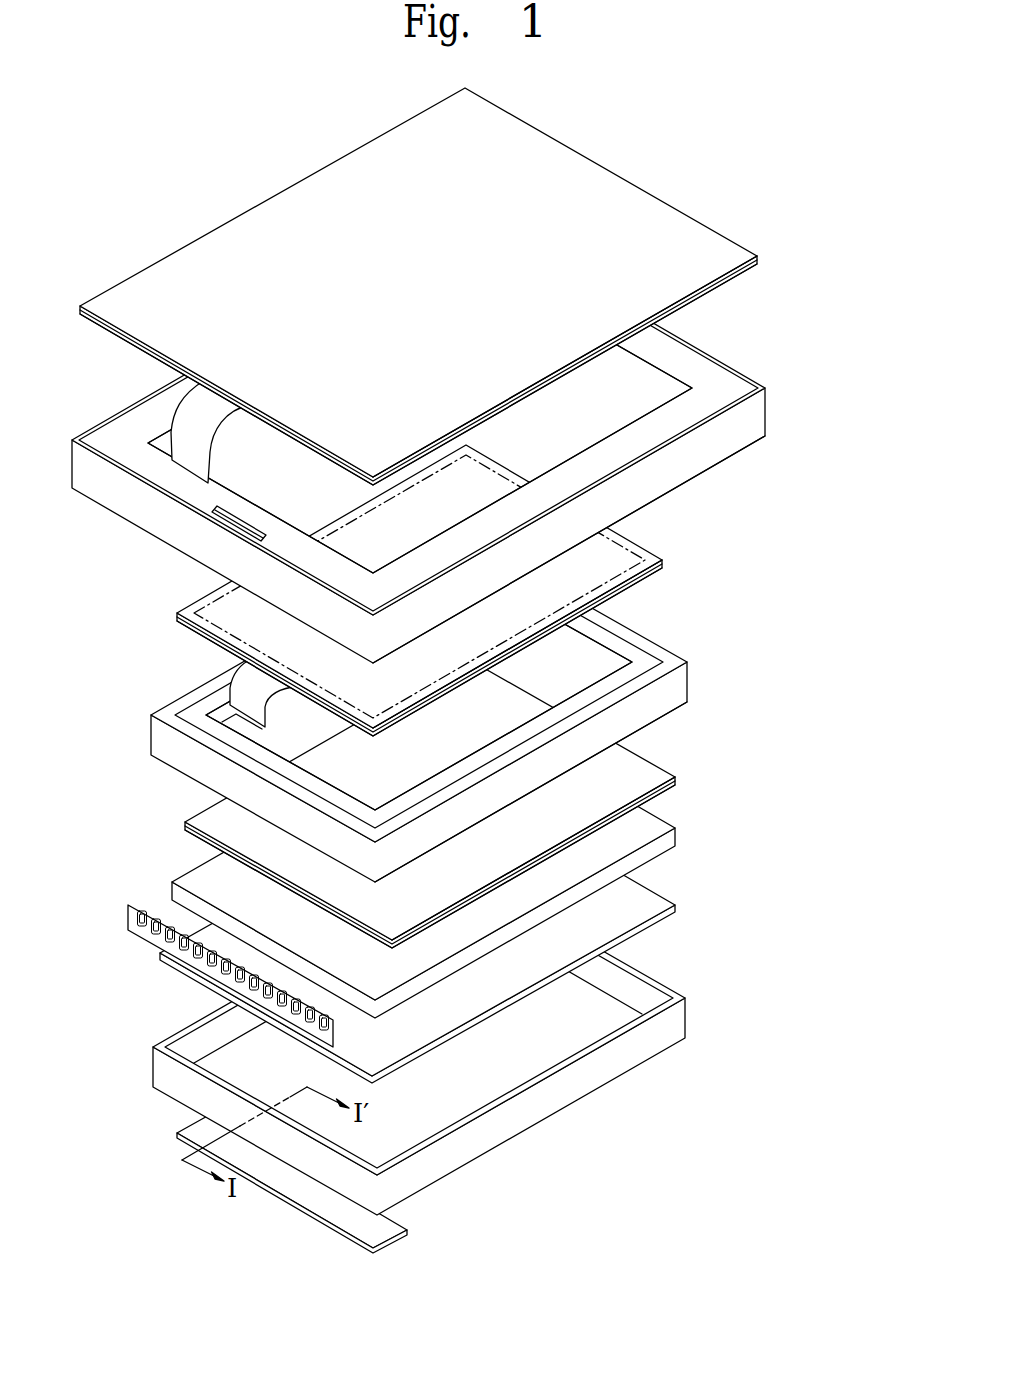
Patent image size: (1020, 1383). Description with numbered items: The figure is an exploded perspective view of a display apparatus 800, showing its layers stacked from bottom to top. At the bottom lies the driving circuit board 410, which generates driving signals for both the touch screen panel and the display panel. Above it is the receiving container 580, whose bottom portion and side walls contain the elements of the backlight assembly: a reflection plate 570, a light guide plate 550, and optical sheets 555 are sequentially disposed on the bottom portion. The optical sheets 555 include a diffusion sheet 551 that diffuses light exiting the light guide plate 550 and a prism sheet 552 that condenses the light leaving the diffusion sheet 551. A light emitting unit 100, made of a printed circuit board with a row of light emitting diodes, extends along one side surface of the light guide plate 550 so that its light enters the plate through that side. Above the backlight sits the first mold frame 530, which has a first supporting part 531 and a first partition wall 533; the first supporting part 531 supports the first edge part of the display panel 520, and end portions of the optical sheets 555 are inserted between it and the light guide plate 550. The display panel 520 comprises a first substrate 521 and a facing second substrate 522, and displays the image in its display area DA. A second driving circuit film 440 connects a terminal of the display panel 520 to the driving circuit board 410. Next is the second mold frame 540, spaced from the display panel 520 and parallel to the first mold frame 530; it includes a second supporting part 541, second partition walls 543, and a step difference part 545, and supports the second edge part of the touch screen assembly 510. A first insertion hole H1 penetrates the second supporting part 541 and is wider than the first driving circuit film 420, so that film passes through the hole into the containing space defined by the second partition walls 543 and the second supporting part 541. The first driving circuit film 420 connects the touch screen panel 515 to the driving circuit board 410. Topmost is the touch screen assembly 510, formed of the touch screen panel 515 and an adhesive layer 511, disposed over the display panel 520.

The display apparatus 800 is at (738, 103).
The touch screen assembly 510 is at (481, 286).
The touch screen panel 515 is at (731, 248).
The adhesive layer 511 is at (745, 267).
The second mold frame 540 is at (482, 438).
The step difference part 545 is at (706, 356).
The second supporting part 541 is at (720, 390).
The second partition walls 543 is at (607, 530).
The first insertion hole H1 is at (238, 518).
The first driving circuit film 420 is at (190, 424).
The display panel 520 is at (493, 590).
The second substrate 522 is at (638, 556).
The first substrate 521 is at (652, 575).
The display area DA is at (602, 589).
The second driving circuit film 440 is at (248, 678).
The first mold frame 530 is at (480, 708).
The first supporting part 531 is at (655, 657).
The first partition wall 533 is at (663, 690).
The optical sheets 555 is at (497, 803).
The prism sheet 552 is at (648, 770).
The diffusion sheet 551 is at (655, 792).
The light guide plate 550 is at (670, 838).
The reflection plate 570 is at (652, 900).
The light emitting unit 100 is at (132, 914).
The receiving container 580 is at (675, 1023).
The driving circuit board 410 is at (338, 1213).